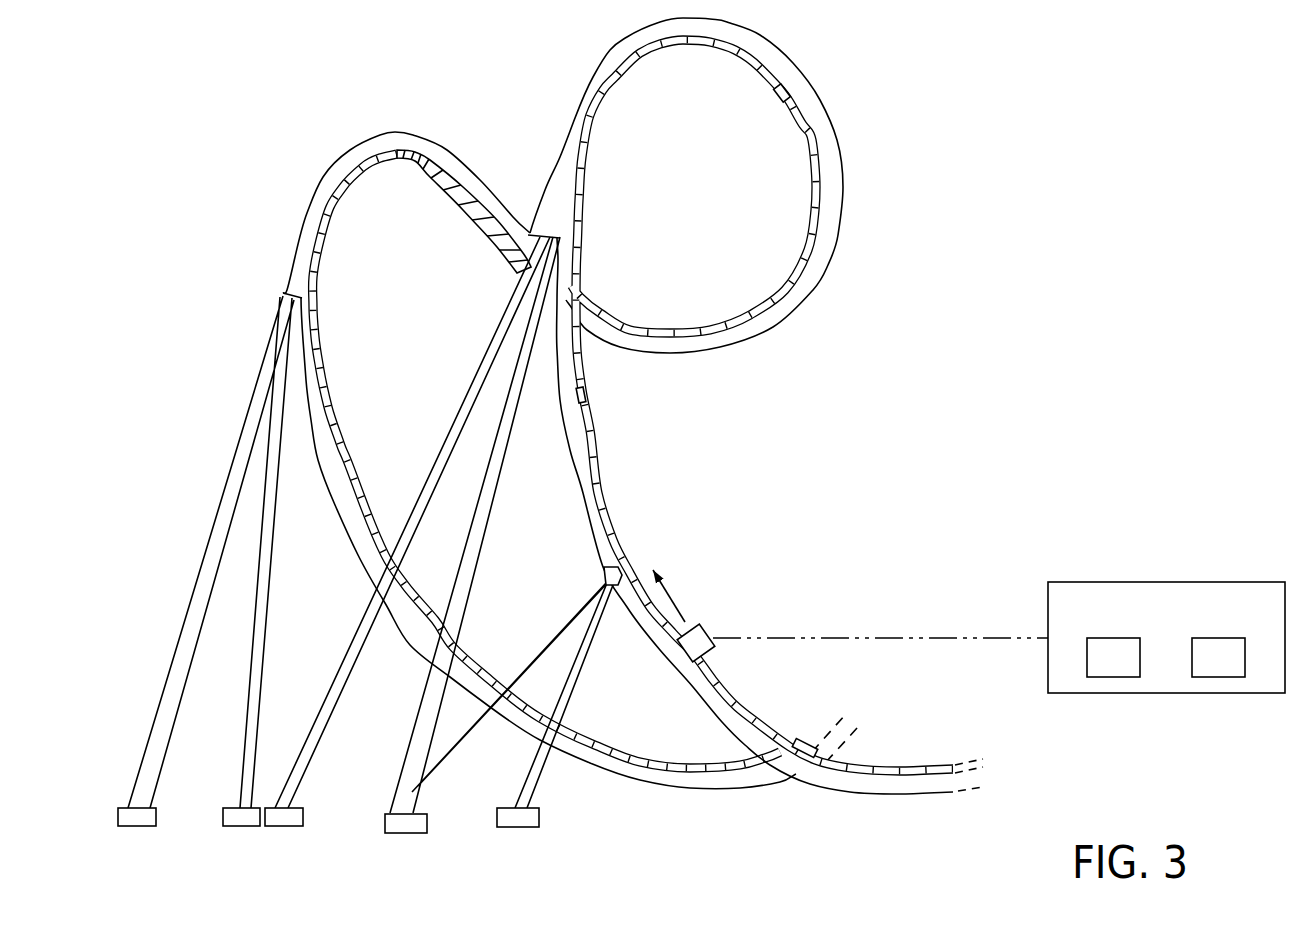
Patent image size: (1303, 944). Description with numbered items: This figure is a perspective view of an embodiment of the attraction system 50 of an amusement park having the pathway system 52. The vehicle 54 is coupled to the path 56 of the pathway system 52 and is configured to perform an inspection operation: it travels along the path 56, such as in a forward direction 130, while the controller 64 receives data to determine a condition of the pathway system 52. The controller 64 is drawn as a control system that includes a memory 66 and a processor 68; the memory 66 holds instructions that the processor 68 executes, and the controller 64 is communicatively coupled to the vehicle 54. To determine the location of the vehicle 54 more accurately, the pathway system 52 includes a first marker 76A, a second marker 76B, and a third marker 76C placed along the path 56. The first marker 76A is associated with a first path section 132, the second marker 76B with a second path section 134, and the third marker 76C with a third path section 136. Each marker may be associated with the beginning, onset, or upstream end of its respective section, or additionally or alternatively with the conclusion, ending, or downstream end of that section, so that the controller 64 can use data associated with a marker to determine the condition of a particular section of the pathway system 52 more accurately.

The attraction system 50 is at (701, 425).
The pathway system 52 is at (550, 425).
The vehicle 54 is at (702, 628).
The path 56 is at (581, 450).
The controller 64 is at (1166, 652).
The memory 66 is at (1113, 677).
The processor 68 is at (1218, 677).
The first marker 76A is at (806, 760).
The second marker 76B is at (586, 393).
The third marker 76C is at (774, 97).
The forward direction 130 is at (668, 597).
The first path section 132 is at (578, 492).
The second path section 134 is at (546, 106).
The third path section 136 is at (740, 395).